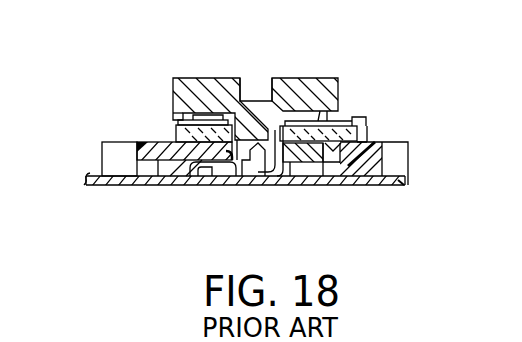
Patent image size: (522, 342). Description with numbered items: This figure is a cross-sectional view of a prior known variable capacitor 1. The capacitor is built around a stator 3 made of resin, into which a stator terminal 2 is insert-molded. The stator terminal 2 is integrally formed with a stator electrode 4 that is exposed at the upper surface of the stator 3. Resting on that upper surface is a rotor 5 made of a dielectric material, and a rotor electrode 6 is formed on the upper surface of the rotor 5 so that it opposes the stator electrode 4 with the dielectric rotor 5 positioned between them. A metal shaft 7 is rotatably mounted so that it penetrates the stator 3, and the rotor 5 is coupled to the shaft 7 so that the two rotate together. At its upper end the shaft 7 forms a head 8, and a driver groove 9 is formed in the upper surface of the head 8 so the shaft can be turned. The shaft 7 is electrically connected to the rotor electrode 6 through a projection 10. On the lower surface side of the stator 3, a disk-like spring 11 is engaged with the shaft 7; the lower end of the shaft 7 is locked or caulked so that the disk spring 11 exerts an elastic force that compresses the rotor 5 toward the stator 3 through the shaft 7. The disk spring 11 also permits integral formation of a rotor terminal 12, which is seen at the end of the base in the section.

The variable capacitor 1 is at (96, 56).
The stator terminal 2 is at (396, 186).
The stator 3 is at (135, 142).
The stator electrode 4 is at (312, 145).
The rotor 5 is at (376, 130).
The rotor electrode 6 is at (345, 112).
The shaft 7 is at (256, 151).
The head 8 is at (196, 78).
The driver groove 9 is at (268, 94).
The projection 10 is at (321, 110).
The disk spring 11 is at (203, 186).
The rotor terminal 12 is at (88, 187).